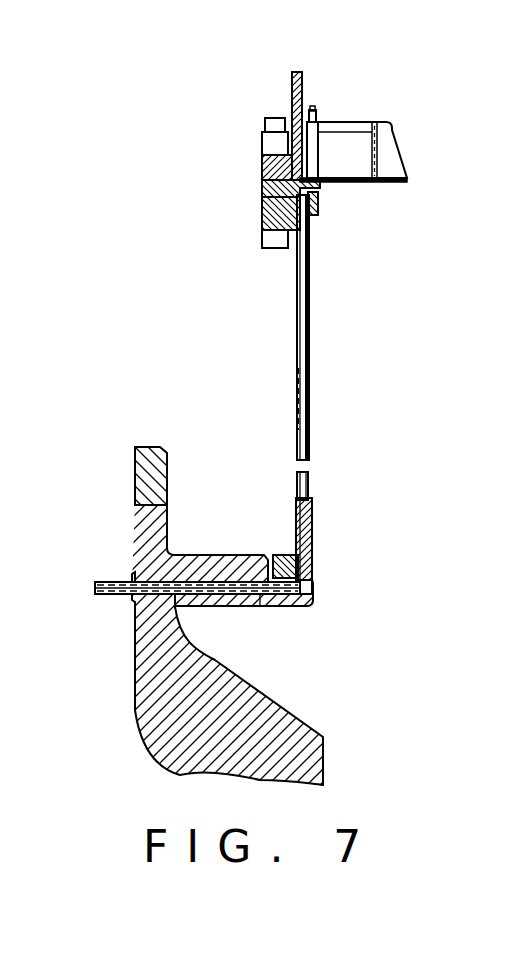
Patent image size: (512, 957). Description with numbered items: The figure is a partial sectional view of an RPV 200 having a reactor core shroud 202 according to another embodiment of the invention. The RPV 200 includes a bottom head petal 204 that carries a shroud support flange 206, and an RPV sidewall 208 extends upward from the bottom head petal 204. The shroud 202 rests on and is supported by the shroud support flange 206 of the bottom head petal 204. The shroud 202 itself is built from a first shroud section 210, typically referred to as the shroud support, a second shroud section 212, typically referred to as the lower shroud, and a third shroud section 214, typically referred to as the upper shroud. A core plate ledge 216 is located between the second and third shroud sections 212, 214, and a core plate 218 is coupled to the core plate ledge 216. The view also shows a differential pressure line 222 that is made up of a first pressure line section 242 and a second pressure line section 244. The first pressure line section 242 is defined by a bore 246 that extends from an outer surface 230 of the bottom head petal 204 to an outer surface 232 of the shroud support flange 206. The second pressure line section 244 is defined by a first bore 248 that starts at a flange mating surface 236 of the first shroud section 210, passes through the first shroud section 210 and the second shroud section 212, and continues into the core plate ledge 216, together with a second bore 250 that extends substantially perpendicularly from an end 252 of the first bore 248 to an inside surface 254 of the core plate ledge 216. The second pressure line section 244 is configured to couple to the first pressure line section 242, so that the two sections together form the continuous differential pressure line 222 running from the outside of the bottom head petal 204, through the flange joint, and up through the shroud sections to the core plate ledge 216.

The RPV 200 is at (222, 136).
The reactor core shroud 202 is at (313, 338).
The bottom head petal 204 is at (150, 748).
The shroud support flange 206 is at (290, 606).
The RPV sidewall 208 is at (135, 482).
The first shroud section 210 is at (313, 545).
The second shroud section 212 is at (308, 275).
The third shroud section 214 is at (302, 84).
The core plate ledge 216 is at (262, 188).
The core plate 218 is at (362, 122).
The differential pressure line 222 is at (220, 600).
The outer surface of bottom head petal 230 is at (133, 665).
The outer surface of shroud support flange 232 is at (313, 581).
The flange mating surface 236 is at (285, 555).
The first pressure line section 242 is at (198, 555).
The second pressure line section 244 is at (308, 479).
The bore 246 is at (95, 588).
The first bore 248 is at (312, 515).
The second bore 250 is at (321, 190).
The end of first bore 252 is at (320, 198).
The inside surface of core plate ledge 254 is at (322, 184).